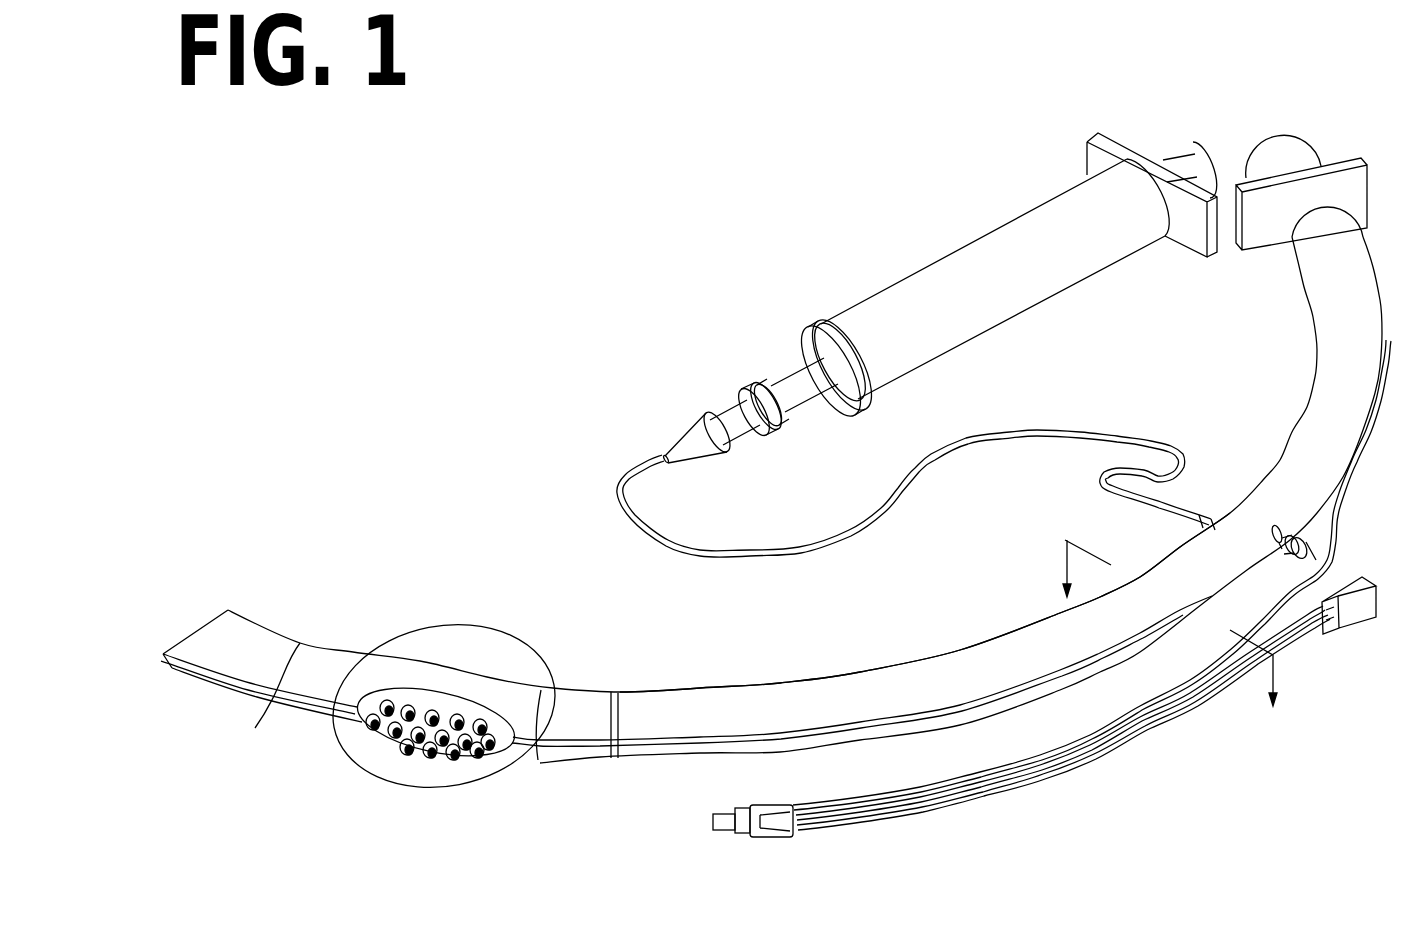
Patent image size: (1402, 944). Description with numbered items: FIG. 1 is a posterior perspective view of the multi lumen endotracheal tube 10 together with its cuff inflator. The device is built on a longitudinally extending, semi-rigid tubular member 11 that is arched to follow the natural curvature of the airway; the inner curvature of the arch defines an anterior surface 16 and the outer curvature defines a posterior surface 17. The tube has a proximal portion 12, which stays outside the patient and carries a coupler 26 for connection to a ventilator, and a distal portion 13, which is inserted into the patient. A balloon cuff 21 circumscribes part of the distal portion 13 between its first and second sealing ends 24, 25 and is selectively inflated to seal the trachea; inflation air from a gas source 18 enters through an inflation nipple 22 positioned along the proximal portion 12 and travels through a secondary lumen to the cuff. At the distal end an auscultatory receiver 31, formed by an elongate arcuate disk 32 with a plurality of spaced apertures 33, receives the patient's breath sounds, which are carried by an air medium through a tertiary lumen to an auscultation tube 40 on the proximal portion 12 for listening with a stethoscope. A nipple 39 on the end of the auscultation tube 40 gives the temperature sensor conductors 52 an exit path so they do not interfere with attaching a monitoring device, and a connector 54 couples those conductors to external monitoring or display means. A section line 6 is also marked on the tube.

The multi lumen endotracheal tube 10 is at (583, 318).
The tubular member 11 is at (798, 700).
The proximal portion 12 is at (1290, 330).
The distal portion 13 is at (293, 590).
The anterior surface 16 is at (910, 660).
The posterior surface 17 is at (862, 708).
The gas source 18 is at (972, 277).
The balloon cuff 21 is at (363, 753).
The inflation nipple 22 is at (1210, 518).
The first sealing end 24 is at (313, 678).
The second sealing end 25 is at (573, 720).
The coupler 26 is at (1278, 150).
The auscultatory receiver 31 is at (432, 765).
The elongate arcuate disk 32 is at (422, 695).
The apertures 33 is at (462, 718).
The nipple 39 is at (703, 808).
The auscultation tube 40 is at (1107, 730).
The temperature sensor conductors 52 is at (1190, 693).
The connector 54 is at (1344, 612).
The section line 6- 6 is at (1170, 613).